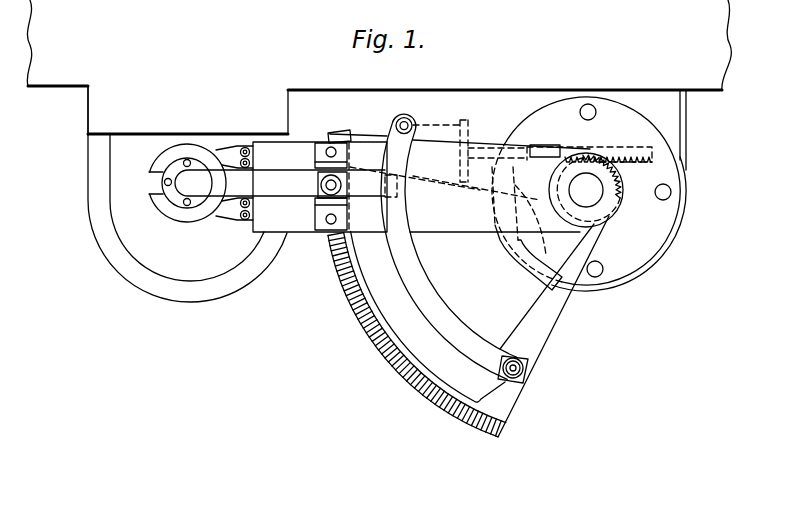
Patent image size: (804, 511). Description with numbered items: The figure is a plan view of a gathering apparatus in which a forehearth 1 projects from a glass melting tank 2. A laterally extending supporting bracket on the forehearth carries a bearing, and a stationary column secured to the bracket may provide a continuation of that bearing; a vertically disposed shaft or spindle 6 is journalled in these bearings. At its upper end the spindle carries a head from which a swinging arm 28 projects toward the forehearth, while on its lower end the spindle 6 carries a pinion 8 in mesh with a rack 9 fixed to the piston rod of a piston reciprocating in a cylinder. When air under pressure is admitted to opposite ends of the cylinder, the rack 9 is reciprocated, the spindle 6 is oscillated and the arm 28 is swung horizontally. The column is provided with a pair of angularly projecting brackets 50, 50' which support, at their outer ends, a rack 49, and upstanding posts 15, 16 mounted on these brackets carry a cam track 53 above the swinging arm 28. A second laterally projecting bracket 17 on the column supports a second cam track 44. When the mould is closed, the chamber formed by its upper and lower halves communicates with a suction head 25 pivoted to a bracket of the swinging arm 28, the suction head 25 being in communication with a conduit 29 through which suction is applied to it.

The forehearth 1 is at (110, 242).
The glass melting tank 2 is at (63, 72).
The shaft or spindle 6 is at (592, 200).
The pinion 8 is at (627, 183).
The rack 9 is at (638, 147).
The upstanding post 15 is at (520, 382).
The upstanding post 16 is at (406, 122).
The second laterally projecting bracket 17 is at (578, 240).
The suction head 25 is at (178, 163).
The swinging arm 28 is at (302, 217).
The conduit 29 is at (322, 183).
The second cam track 44 is at (517, 257).
The rack 49 is at (355, 320).
The angularly projecting bracket 50 is at (470, 150).
The angularly projecting bracket 50' is at (553, 326).
The cam track 53 is at (452, 327).